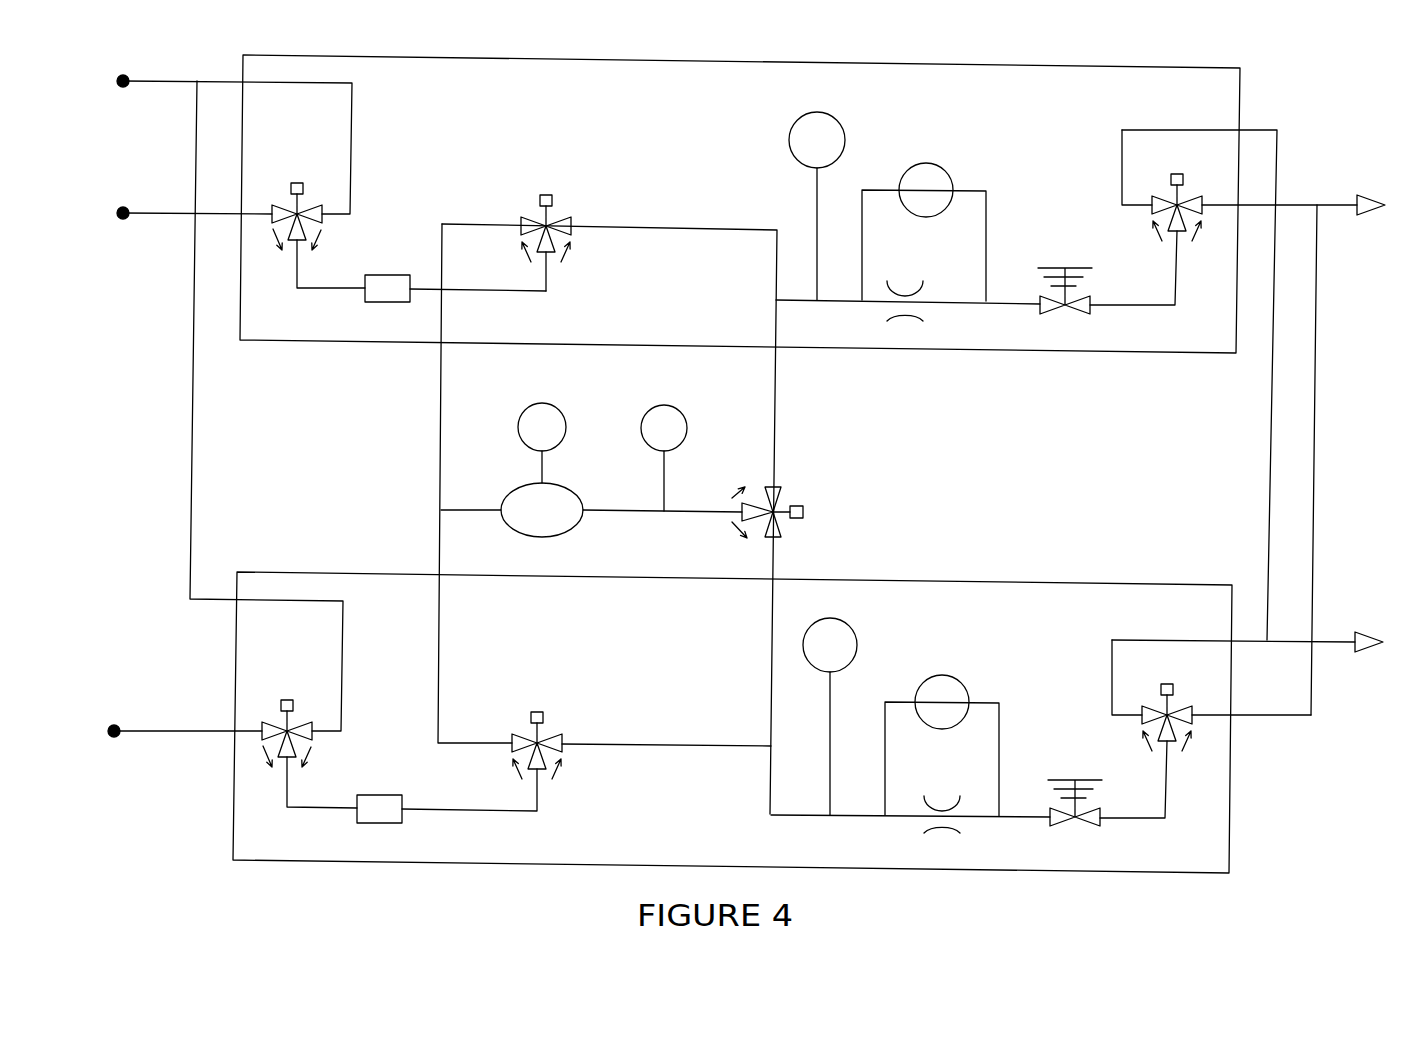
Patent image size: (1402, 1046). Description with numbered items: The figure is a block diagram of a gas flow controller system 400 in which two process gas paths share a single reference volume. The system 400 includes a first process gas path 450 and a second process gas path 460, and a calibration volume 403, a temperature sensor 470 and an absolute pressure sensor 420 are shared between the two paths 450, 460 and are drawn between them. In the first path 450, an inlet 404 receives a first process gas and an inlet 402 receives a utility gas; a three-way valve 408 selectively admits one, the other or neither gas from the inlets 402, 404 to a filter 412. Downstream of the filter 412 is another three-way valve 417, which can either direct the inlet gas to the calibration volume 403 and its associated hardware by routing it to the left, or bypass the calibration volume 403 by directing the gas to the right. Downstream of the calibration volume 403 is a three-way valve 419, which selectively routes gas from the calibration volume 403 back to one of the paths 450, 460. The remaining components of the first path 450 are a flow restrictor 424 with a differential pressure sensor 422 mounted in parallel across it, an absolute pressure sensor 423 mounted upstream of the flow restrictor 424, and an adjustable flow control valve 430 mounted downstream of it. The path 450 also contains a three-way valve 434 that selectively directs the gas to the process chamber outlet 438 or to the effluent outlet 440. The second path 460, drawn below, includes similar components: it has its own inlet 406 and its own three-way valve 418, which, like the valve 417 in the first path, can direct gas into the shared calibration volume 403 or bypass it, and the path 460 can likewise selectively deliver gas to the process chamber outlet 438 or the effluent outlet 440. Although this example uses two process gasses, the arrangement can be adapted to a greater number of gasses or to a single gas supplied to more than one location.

The system 400 is at (1268, 854).
The inlet 402 is at (178, 83).
The calibration volume 403 is at (512, 487).
The inlet 404 is at (172, 210).
The third inlet 406 is at (178, 728).
The three-way valve 408 is at (292, 203).
The filter 412 is at (375, 303).
The three-way valve 417 is at (540, 215).
The three-way valve 418 is at (550, 728).
The three-way valve 419 is at (787, 523).
The absolute pressure sensor 420 is at (685, 414).
The differential pressure sensor 422 is at (945, 170).
The absolute pressure sensor 423 is at (833, 117).
The flow restrictor 424 is at (907, 283).
The adjustable flow control valve 430 is at (1050, 265).
The three-way valve 434 is at (1185, 196).
The process chamber outlet 438 is at (1290, 203).
The effluent outlet 440 is at (1244, 642).
The first process gas path 450 is at (986, 348).
The second process gas path 460 is at (985, 580).
The temperature sensor 470 is at (564, 407).